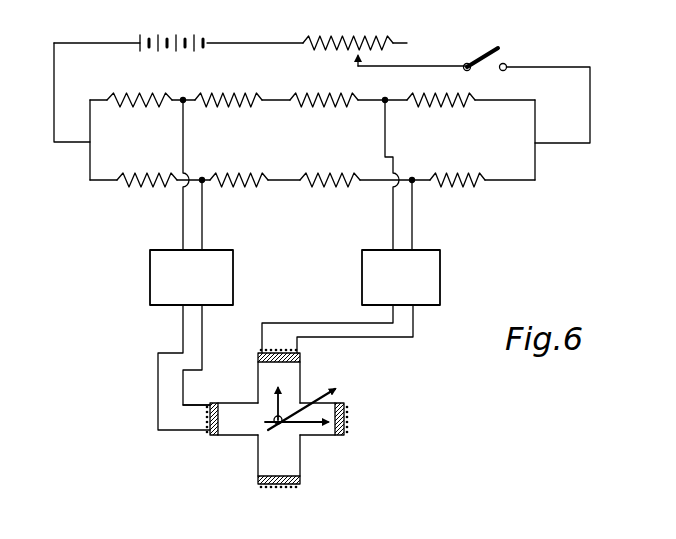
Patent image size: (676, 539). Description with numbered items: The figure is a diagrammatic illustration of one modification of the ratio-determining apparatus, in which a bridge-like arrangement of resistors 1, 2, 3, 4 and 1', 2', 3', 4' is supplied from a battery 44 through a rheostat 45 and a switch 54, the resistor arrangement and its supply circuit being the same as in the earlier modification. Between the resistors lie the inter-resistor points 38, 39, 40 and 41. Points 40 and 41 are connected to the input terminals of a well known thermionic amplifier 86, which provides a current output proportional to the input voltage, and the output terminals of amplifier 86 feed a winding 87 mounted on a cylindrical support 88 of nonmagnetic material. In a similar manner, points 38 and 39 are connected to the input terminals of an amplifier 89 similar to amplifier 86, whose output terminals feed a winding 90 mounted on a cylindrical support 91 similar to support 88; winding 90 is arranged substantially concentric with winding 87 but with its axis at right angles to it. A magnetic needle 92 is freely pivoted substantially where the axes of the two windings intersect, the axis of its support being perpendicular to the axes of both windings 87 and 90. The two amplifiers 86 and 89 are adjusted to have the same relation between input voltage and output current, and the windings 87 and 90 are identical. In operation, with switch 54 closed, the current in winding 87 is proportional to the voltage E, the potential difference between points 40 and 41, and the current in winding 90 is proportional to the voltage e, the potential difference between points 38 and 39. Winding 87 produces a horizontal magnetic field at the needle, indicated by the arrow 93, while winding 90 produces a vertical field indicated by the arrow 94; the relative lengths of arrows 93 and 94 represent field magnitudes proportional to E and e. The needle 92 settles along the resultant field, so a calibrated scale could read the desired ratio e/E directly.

The battery 44 is at (163, 41).
The rheostat 45 is at (336, 42).
The switch 54 is at (470, 60).
The resistor 1 is at (228, 88).
The resistor 2 is at (139, 88).
The resistor 3 is at (441, 88).
The resistor 4 is at (324, 88).
The resistor 1' is at (147, 164).
The resistor 2' is at (240, 164).
The resistor 3' is at (330, 164).
The resistor 4' is at (457, 164).
The inter-resistor point 38 is at (183, 97).
The inter-resistor point 39 is at (203, 177).
The inter-resistor point 40 is at (385, 97).
The inter-resistor point 41 is at (412, 177).
The amplifier 86 is at (440, 263).
The amplifier 89 is at (150, 268).
The winding 87 is at (280, 352).
The cylindrical support 88 is at (262, 480).
The winding 90 is at (209, 422).
The cylindrical support 91 is at (215, 437).
The magnetic needle 92 is at (318, 395).
The arrow 93 is at (312, 425).
The arrow 94 is at (272, 405).